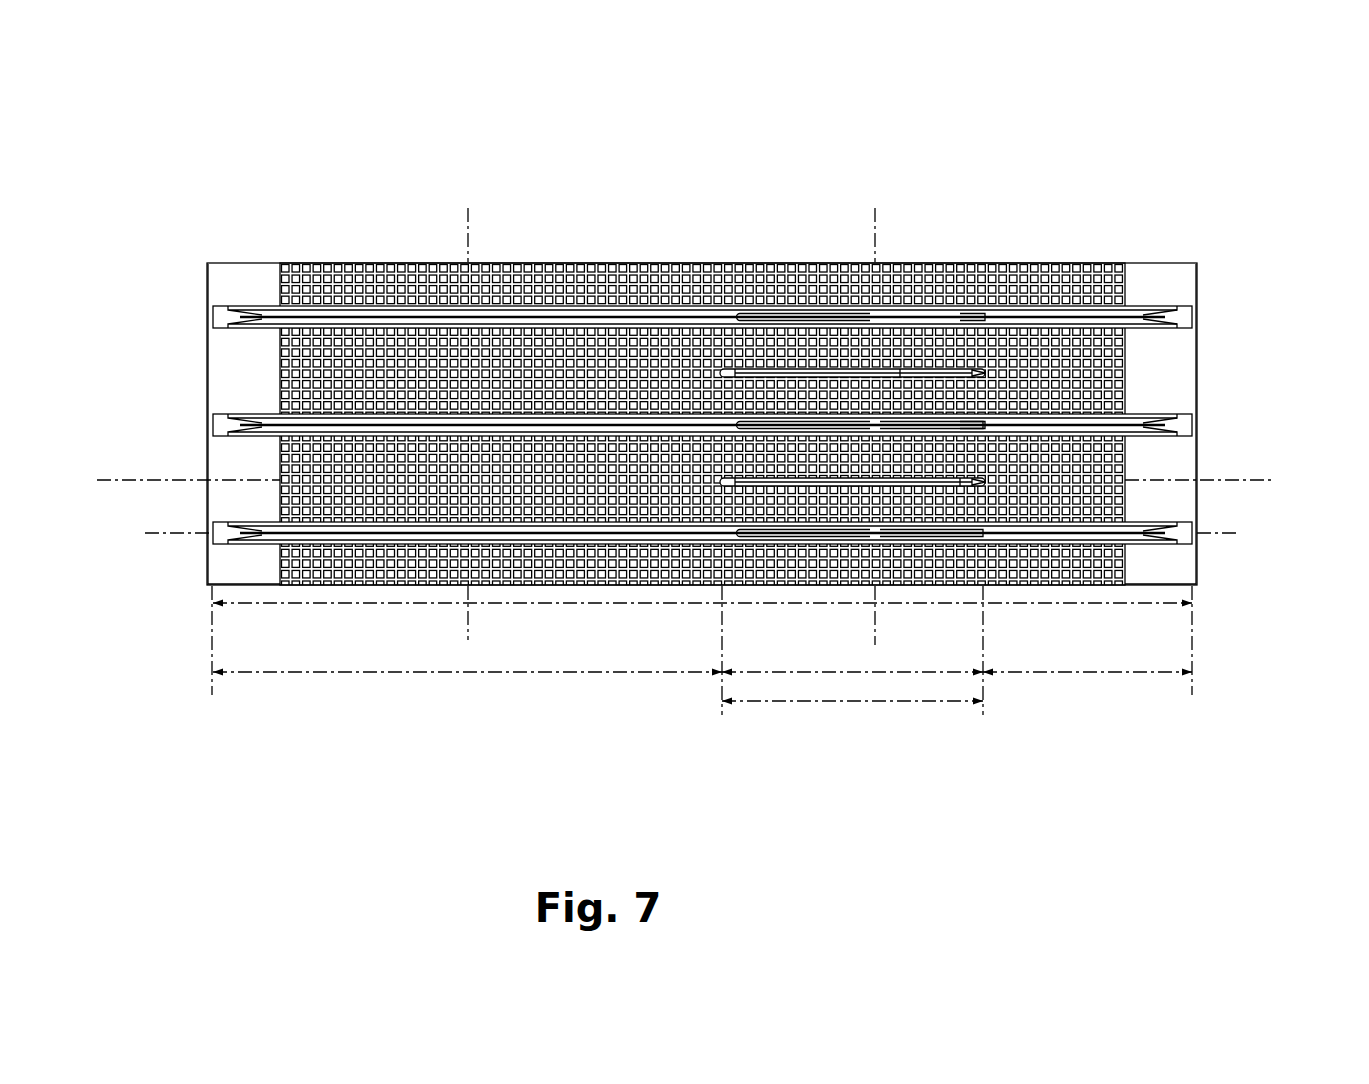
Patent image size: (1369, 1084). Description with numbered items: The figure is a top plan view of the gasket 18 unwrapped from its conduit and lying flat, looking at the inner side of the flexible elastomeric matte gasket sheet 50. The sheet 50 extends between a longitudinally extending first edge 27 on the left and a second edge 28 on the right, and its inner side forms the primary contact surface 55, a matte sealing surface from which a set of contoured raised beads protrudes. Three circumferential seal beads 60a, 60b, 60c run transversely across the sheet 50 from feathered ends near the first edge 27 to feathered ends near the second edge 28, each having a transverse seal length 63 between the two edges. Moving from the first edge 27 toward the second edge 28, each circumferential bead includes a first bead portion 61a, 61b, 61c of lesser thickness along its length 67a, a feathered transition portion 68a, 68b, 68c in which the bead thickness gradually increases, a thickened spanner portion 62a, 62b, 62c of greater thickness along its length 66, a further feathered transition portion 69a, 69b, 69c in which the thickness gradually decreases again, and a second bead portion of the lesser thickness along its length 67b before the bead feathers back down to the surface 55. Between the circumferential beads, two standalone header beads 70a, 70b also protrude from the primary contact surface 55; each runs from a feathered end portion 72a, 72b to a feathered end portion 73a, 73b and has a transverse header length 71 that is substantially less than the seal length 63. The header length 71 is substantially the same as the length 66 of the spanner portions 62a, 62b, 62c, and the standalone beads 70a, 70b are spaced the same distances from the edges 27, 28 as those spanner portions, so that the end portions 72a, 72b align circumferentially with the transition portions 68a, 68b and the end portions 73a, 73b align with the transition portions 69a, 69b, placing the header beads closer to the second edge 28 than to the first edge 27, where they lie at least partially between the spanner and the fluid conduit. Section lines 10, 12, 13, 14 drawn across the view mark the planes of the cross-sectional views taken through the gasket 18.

The section line 10- 10 is at (878, 225).
The section line 12- 12 is at (472, 225).
The section line 13- 13 is at (168, 537).
The section line 14- 14 is at (117, 483).
The gasket 18 is at (328, 260).
The first edge 27 is at (205, 390).
The second edge 28 is at (1201, 390).
The flexible sheet 50 is at (232, 293).
The primary contact surface 55 is at (795, 273).
The circumferential seal bead 60a is at (348, 310).
The circumferential seal bead 60b is at (383, 410).
The circumferential seal bead 60c is at (405, 547).
The first bead portion 61a is at (538, 304).
The first bead portion 61b is at (613, 412).
The first bead portion 61c is at (636, 520).
The thickened spanner portion 62a is at (906, 411).
The thickened spanner portion 62b is at (940, 367).
The thickened spanner portion 62c is at (937, 549).
The transverse seal length 63 is at (267, 607).
The length of thickened spanner portion 66 is at (857, 676).
The length of first bead portion 67a is at (326, 677).
The length of second bead portion 67b is at (1058, 678).
The feathered transition portion 68a is at (755, 306).
The feathered transition portion 68b is at (740, 411).
The feathered transition portion 68c is at (744, 551).
The feathered transition portion 69a is at (1097, 304).
The feathered transition portion 69b is at (1008, 362).
The feathered transition portion 69c is at (982, 490).
The standalone header bead 70a is at (976, 366).
The standalone header bead 70b is at (990, 476).
The transverse header length 71 is at (780, 703).
The feathered end portion 72a is at (748, 381).
The feathered end portion 72b is at (740, 490).
The feathered end portion 73a is at (987, 308).
The feathered end portion 73b is at (977, 440).